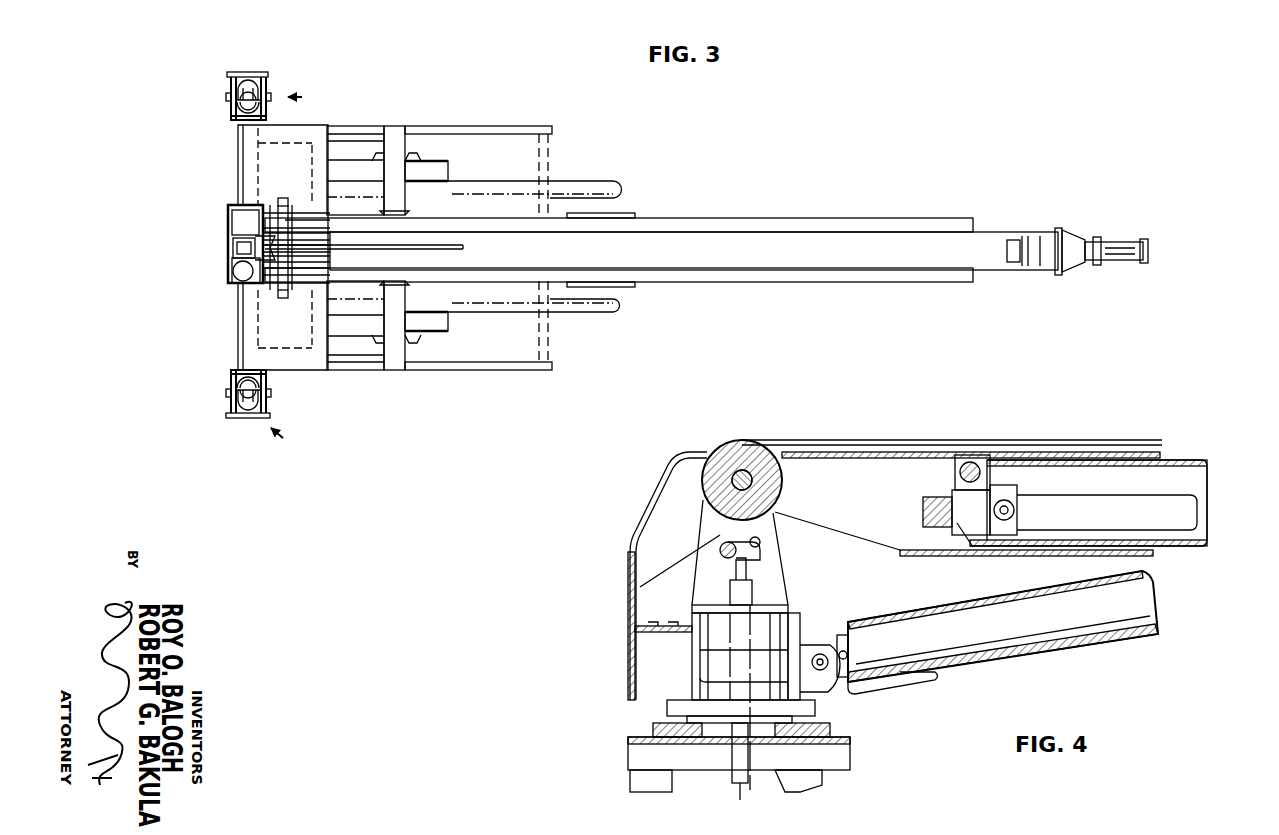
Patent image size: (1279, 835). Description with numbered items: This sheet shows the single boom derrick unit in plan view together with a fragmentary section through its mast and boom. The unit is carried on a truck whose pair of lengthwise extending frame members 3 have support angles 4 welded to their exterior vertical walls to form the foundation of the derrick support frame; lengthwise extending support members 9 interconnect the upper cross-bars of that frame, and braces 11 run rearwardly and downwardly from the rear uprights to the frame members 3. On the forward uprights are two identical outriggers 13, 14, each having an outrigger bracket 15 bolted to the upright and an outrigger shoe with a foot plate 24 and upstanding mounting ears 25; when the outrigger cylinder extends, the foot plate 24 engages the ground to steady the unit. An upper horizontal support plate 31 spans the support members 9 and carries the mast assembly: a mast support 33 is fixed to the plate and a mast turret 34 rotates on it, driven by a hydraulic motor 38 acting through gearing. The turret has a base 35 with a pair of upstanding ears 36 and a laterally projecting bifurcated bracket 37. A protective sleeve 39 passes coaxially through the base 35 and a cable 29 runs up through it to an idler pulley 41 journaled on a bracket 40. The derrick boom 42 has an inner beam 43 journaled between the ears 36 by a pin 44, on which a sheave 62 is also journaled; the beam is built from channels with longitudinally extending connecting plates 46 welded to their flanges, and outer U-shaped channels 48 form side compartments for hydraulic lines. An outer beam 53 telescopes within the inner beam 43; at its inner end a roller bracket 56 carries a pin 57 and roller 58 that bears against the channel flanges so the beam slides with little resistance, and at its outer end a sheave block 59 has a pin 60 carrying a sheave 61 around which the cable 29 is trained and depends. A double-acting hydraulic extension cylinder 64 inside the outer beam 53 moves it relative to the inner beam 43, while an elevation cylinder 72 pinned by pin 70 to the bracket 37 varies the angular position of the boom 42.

In FIG. 3, the frame members 3 is at (588, 182).
In FIG. 3, the support angles 4 is at (448, 172).
In FIG. 3, the support members 9 is at (358, 128).
In FIG. 3, the braces 11 is at (458, 128).
In FIG. 3, the outrigger 13 is at (307, 98).
In FIG. 3, the outrigger 14 is at (288, 440).
In FIG. 3, the outrigger bracket 15 is at (264, 118).
In FIG. 3, the foot plate 24 is at (252, 77).
In FIG. 3, the mounting ears 25 is at (231, 88).
In FIG. 3, the cable 29 is at (463, 247).
In FIG. 4, the cable 29 is at (890, 440).
In FIG. 3, the upper horizontal support plate 31 is at (300, 355).
In FIG. 4, the upper horizontal support plate 31 is at (852, 752).
In FIG. 4, the mast support 33 is at (652, 729).
In FIG. 4, the mast turret 34 is at (630, 535).
In FIG. 4, the base 35 is at (815, 708).
In FIG. 3, the upstanding ears 36 is at (236, 205).
In FIG. 4, the upstanding ears 36 is at (655, 496).
In FIG. 4, the bifurcated bracket 37 is at (823, 650).
In FIG. 4, the hydraulic motor 38 is at (780, 614).
In FIG. 4, the protective sleeve 39 is at (752, 590).
In FIG. 4, the bracket 40 is at (655, 573).
In FIG. 4, the idler pulley 41 is at (720, 547).
In FIG. 3, the derrick boom 42 is at (718, 290).
In FIG. 4, the derrick boom 42 is at (1205, 455).
In FIG. 4, the inner beam 43 is at (985, 557).
In FIG. 3, the pin 44 is at (284, 198).
In FIG. 4, the pin 44 is at (735, 478).
In FIG. 3, the connecting plates 46 is at (619, 250).
In FIG. 3, the U-shaped channels 48 is at (873, 218).
In FIG. 3, the outer beam 53 is at (1060, 228).
In FIG. 4, the outer beam 53 is at (1185, 546).
In FIG. 4, the roller bracket 56 is at (990, 480).
In FIG. 4, the pin 57 is at (955, 470).
In FIG. 4, the roller 58 is at (975, 460).
In FIG. 3, the sheave block 59 is at (1068, 275).
In FIG. 3, the pin 60 is at (1099, 237).
In FIG. 3, the sheave 61 is at (1118, 258).
In FIG. 3, the sheave 62 is at (245, 232).
In FIG. 4, the sheave 62 is at (745, 455).
In FIG. 4, the extension cylinder 64 is at (1160, 492).
In FIG. 4, the pin 70 is at (838, 635).
In FIG. 4, the elevation cylinder 72 is at (1033, 655).